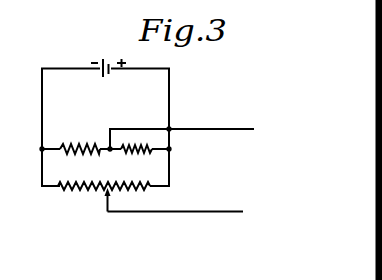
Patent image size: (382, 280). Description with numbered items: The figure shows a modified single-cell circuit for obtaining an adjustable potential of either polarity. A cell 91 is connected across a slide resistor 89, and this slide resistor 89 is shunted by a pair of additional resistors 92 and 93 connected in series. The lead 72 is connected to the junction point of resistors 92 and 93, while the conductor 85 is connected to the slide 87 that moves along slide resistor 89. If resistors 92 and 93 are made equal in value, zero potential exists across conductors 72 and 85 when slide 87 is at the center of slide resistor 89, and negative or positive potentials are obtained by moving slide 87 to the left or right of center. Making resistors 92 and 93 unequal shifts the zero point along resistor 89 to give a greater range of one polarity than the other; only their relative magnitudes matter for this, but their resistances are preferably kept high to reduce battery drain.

The cell 91 is at (105, 62).
The lead 72 is at (217, 123).
The resistor 92 is at (80, 146).
The resistor 93 is at (124, 165).
The slide resistor 89 is at (65, 188).
The slide 87 is at (107, 213).
The conductor 85 is at (192, 213).